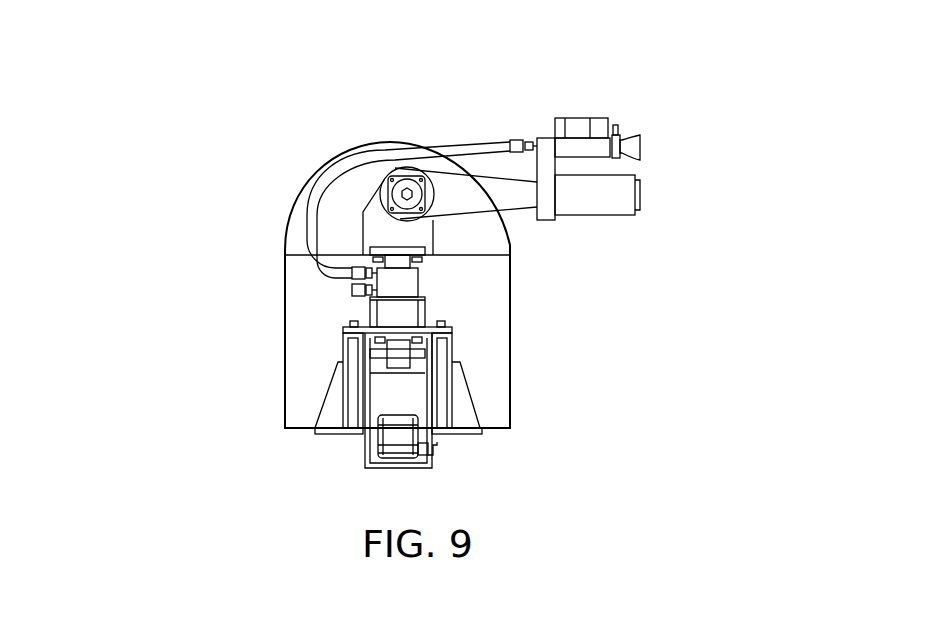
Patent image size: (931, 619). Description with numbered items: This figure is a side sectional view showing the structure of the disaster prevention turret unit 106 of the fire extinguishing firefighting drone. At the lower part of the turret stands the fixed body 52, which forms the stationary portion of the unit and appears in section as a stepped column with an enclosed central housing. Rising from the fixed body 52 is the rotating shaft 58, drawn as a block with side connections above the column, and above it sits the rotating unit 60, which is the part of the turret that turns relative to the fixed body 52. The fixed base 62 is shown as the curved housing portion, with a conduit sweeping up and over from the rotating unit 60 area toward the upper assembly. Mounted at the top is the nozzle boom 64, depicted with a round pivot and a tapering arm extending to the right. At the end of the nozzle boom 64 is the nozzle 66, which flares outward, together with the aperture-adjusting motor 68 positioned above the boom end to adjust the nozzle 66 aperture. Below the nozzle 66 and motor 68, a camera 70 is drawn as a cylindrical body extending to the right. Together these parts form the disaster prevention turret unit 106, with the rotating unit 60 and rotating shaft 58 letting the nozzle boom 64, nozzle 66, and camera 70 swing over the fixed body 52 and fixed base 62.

The disaster prevention turret unit 106 is at (252, 190).
The fixed base 62 is at (377, 220).
The nozzle boom 64 is at (453, 187).
The aperture-adjusting motor 68 is at (578, 118).
The nozzle 66 is at (640, 148).
The camera 70 is at (623, 197).
The rotating unit 60 is at (368, 247).
The rotating shaft 58 is at (413, 280).
The fixed body 52 is at (340, 342).